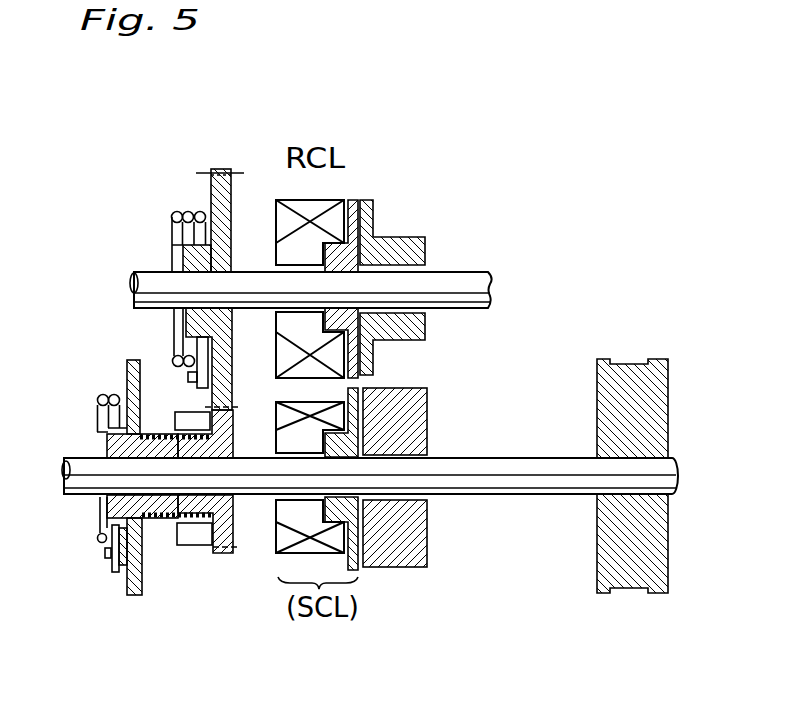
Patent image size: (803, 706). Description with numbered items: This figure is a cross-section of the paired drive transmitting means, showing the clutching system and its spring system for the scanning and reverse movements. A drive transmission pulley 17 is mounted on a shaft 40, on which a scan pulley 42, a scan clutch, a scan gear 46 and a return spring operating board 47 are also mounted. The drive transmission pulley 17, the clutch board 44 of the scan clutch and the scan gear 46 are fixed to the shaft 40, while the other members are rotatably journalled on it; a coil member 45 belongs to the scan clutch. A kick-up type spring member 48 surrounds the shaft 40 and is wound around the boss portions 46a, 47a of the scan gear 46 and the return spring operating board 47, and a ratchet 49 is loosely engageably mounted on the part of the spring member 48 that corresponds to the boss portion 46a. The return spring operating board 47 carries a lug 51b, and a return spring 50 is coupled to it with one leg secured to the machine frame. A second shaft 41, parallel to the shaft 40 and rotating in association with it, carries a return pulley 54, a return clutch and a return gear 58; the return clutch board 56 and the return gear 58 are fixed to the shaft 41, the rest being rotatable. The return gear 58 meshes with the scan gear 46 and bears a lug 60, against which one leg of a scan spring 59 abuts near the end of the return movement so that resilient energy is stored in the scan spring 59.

The drive transmission pulley 17 is at (670, 582).
The shaft 40 is at (525, 480).
The shaft 41 is at (465, 272).
The scan pulley 42 is at (408, 550).
The clutch board 44 is at (357, 572).
The coil member 45 is at (278, 553).
The scan gear 46 is at (232, 511).
The boss portion 46a is at (183, 545).
The return spring operating board 47 is at (127, 588).
The boss portion 47a is at (157, 518).
The spring member 48 is at (158, 435).
The ratchet 49 is at (200, 547).
The return spring 50 is at (99, 512).
The lug 51b is at (110, 555).
The return pulley 54 is at (400, 238).
The return clutch board 56 is at (355, 200).
The return gear 58 is at (223, 198).
The scan spring 59 is at (170, 227).
The lug 60 is at (190, 376).